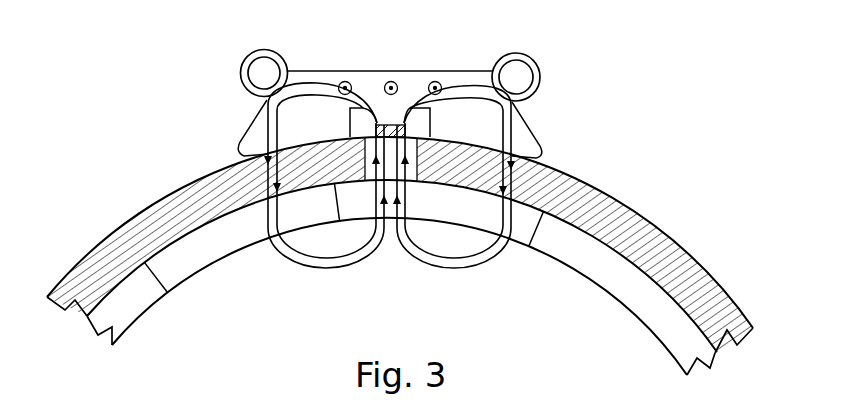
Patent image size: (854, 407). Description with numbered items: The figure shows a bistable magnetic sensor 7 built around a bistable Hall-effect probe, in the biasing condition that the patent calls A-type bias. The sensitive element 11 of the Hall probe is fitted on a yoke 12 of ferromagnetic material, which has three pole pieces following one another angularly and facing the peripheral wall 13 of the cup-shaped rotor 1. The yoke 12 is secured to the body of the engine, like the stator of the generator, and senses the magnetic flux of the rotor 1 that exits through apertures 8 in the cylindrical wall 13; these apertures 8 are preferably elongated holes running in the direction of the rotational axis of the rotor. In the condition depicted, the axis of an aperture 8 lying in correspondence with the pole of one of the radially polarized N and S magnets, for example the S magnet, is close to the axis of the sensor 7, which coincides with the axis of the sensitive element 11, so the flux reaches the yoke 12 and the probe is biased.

The rotor 1 is at (144, 176).
The sensor 7 is at (365, 59).
The apertures 8 is at (392, 167).
The sensitive element 11 is at (397, 124).
The yoke 12 is at (248, 146).
The peripheral wall 13 is at (658, 232).